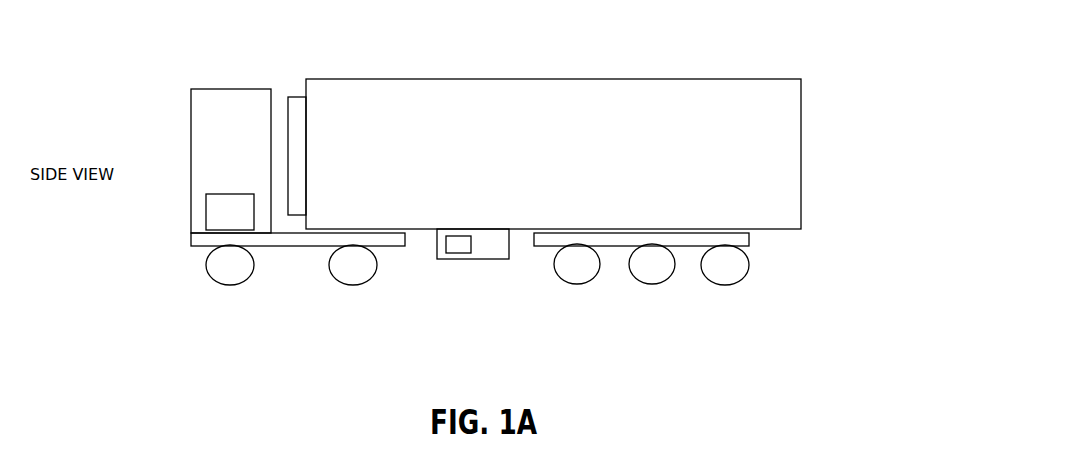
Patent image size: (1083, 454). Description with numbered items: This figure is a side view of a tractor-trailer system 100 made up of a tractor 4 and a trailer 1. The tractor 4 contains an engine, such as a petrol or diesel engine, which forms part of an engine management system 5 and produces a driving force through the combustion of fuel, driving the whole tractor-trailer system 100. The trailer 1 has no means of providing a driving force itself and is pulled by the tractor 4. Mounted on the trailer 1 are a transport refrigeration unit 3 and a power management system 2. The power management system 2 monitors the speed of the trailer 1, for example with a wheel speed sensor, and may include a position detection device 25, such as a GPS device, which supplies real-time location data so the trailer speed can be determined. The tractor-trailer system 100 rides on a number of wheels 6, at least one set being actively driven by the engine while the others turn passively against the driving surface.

The tractor-trailer system 100 is at (677, 52).
The trailer 1 is at (786, 154).
The power management system 2 is at (493, 254).
The position detection device 25 is at (459, 249).
The transport refrigeration unit 3 is at (299, 132).
The tractor 4 is at (215, 117).
The engine management system 5 is at (231, 219).
The wheels 6 is at (650, 271).